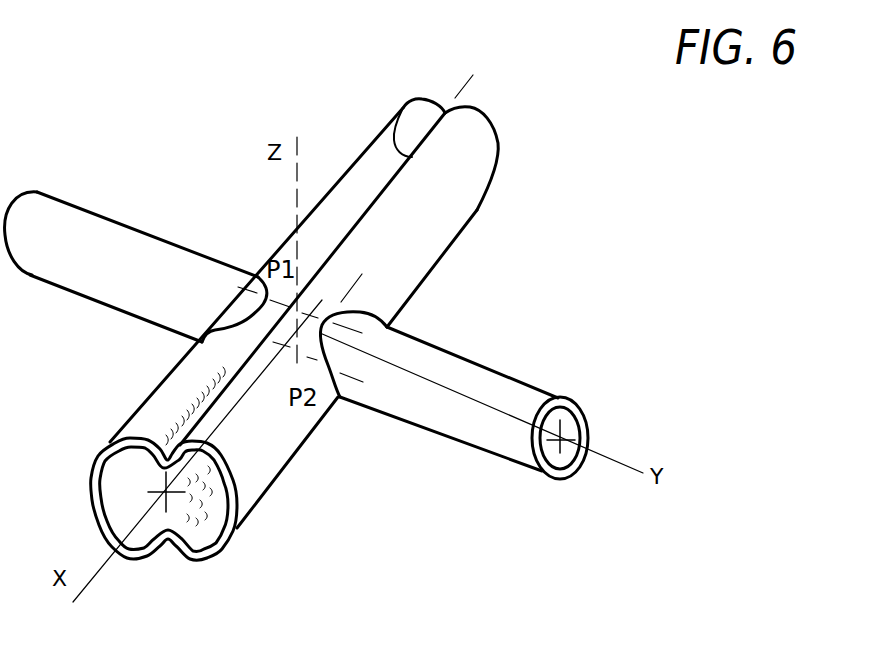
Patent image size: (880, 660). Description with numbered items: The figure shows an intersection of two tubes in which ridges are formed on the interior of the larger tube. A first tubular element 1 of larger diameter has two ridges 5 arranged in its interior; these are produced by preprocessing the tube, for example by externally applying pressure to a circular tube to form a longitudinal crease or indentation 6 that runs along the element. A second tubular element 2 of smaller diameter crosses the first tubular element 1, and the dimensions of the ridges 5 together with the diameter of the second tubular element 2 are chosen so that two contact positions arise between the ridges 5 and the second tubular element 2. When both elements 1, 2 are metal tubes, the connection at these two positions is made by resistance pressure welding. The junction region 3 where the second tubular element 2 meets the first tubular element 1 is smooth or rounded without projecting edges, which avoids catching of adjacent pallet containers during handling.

The first tubular element 1 is at (270, 460).
The second tubular element 2 is at (472, 438).
The junction 3 is at (360, 312).
The ridges 5 is at (157, 466).
The longitudinal crease or indentation 6 is at (395, 118).